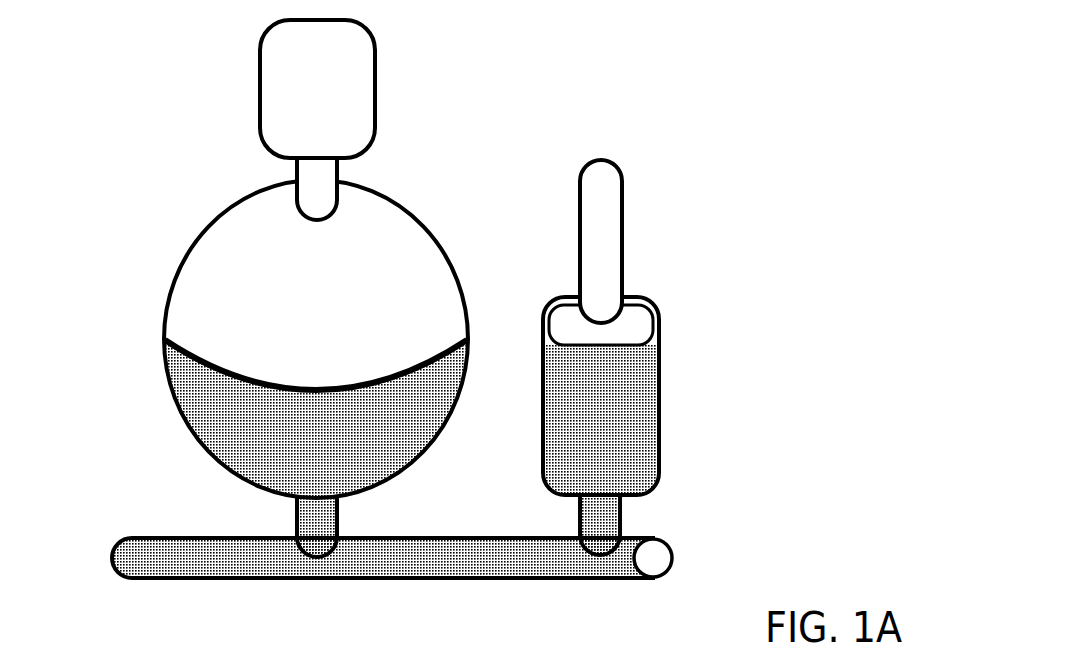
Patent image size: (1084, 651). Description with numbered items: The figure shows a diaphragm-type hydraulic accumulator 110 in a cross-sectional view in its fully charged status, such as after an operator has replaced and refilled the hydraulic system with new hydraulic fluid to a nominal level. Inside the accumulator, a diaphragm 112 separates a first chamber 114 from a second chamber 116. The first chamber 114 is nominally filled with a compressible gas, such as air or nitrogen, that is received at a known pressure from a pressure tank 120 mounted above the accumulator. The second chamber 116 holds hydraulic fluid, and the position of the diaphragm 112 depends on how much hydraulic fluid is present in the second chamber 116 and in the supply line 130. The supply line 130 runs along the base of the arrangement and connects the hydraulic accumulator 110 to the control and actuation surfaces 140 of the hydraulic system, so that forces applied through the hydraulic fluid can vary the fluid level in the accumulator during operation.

The diaphragm-type hydraulic accumulator 110 is at (395, 200).
The diaphragm 112 is at (358, 387).
The first chamber 114 is at (192, 293).
The second chamber 116 is at (228, 423).
The pressure tank 120 is at (375, 66).
The supply line 130 is at (118, 538).
The control and actuation surfaces 140 is at (658, 413).